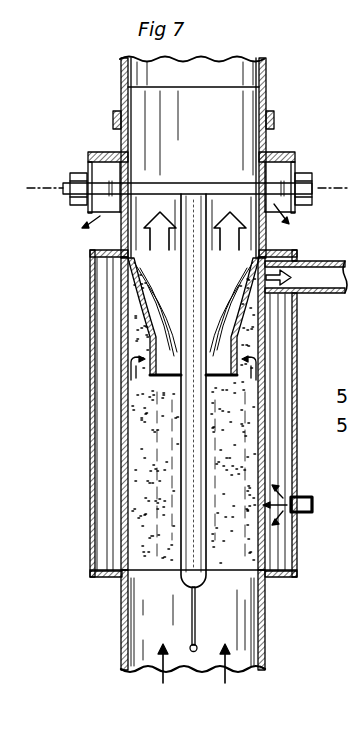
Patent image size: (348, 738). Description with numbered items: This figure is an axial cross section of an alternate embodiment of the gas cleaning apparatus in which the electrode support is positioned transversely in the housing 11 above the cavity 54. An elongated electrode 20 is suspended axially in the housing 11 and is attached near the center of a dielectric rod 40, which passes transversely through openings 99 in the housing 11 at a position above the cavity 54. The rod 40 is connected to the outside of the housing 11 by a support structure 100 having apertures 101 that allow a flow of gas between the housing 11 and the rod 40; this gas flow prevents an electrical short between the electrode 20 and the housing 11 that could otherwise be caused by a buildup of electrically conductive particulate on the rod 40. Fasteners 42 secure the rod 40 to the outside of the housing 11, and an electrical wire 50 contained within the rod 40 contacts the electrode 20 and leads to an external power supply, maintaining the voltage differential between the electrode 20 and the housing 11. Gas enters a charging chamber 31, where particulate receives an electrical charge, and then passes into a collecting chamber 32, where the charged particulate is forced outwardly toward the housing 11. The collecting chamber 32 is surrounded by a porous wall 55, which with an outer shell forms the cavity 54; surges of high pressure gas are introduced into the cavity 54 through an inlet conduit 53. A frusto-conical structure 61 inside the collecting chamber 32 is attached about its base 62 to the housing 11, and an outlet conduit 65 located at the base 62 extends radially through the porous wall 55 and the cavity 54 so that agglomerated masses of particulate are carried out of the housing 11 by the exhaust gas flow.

The housing 11 is at (122, 635).
The elongated electrode 20 is at (190, 561).
The charging chamber 31 is at (161, 638).
The collecting chamber 32 is at (163, 503).
The dielectric rod 40 is at (168, 183).
The fasteners 42 is at (75, 175).
The electrical wire 50 is at (43, 188).
The inlet conduit 53 is at (305, 497).
The cavity 54 is at (104, 366).
The porous wall 55 is at (123, 443).
The frusto-conical structure 61 is at (147, 317).
The base 62 is at (125, 263).
The outlet conduit 65 is at (325, 294).
The openings 99 is at (152, 213).
The support structure 100 is at (89, 172).
The apertures 101 is at (111, 208).